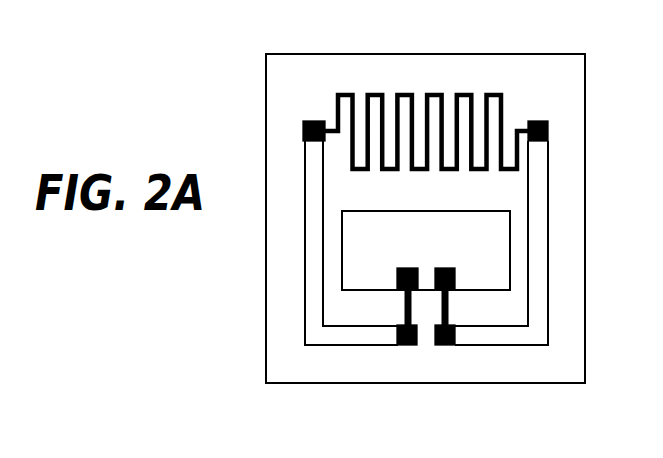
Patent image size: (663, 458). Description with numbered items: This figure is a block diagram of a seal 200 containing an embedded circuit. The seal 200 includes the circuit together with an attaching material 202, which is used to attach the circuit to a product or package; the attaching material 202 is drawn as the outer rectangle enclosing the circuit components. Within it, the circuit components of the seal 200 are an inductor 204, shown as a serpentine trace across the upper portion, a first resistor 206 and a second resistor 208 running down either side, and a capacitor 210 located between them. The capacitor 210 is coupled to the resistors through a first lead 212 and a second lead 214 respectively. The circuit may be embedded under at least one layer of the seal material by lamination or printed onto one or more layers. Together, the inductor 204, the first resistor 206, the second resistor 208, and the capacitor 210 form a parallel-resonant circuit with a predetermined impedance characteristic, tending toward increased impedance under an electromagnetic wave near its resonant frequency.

The seal 200 is at (197, 28).
The attaching material 202 is at (425, 194).
The inductor 204 is at (450, 114).
The first resistor 206 is at (339, 249).
The second resistor 208 is at (505, 250).
The capacitor 210 is at (426, 235).
The first lead 212 is at (433, 353).
The second lead 214 is at (459, 296).